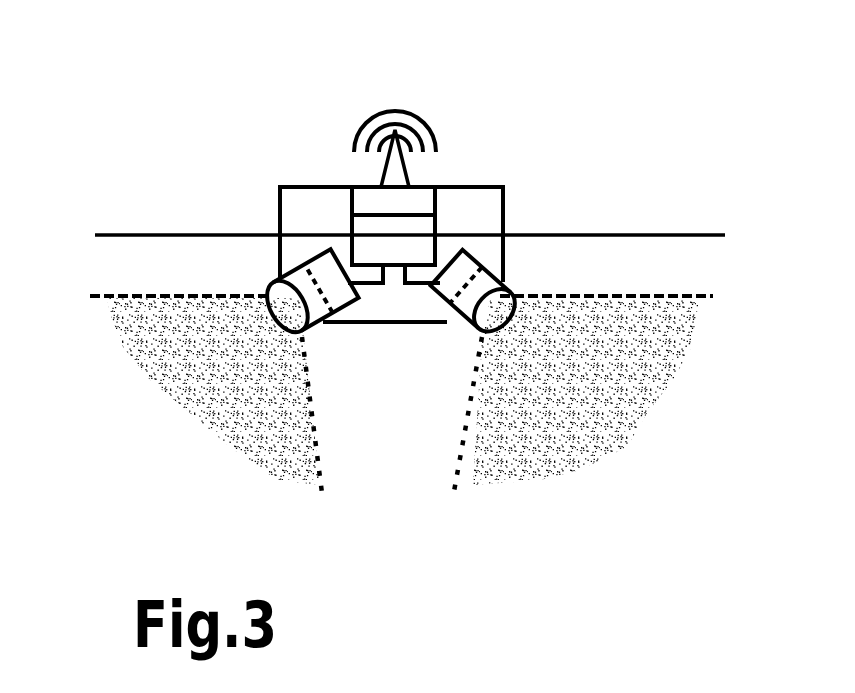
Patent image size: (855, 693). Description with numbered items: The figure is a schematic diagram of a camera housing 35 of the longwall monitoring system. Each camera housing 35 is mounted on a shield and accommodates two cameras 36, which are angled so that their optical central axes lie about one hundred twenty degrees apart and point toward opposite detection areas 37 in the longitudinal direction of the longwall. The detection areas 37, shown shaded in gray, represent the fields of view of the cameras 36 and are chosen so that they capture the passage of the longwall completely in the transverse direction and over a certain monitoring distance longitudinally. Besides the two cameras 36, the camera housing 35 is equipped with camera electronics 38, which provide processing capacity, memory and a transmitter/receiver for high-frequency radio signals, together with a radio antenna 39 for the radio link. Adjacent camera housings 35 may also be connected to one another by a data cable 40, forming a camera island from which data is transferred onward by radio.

The camera housing 35 is at (346, 186).
The camera 36 is at (391, 441).
The detection area 37 is at (265, 413).
The camera electronics 38 is at (529, 146).
The radio antenna 39 is at (470, 108).
The data cable 40 is at (394, 162).